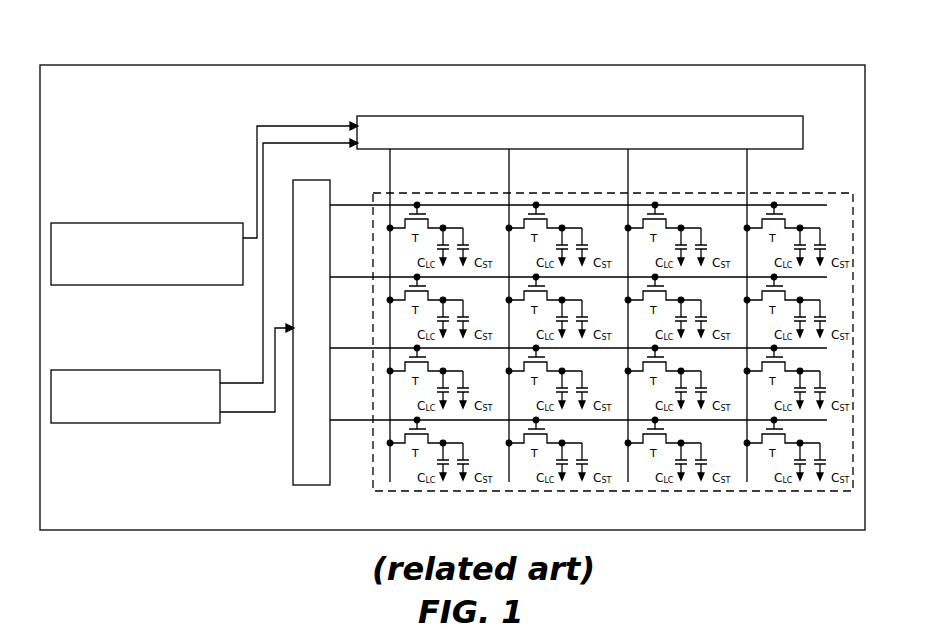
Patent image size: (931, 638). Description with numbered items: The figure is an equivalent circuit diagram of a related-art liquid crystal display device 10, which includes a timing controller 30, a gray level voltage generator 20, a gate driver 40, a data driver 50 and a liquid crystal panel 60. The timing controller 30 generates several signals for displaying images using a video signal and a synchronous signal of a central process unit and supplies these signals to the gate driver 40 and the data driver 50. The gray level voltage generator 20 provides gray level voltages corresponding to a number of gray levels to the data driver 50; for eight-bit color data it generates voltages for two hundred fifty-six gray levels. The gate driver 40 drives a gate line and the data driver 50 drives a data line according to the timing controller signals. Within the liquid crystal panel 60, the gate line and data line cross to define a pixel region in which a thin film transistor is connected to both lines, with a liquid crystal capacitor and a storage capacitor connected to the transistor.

The liquid crystal display device 10 is at (750, 65).
The gray level voltage generator 20 is at (178, 223).
The timing controller 30 is at (170, 370).
The gate driver 40 is at (293, 455).
The data driver 50 is at (447, 116).
The liquid crystal panel 60 is at (853, 243).